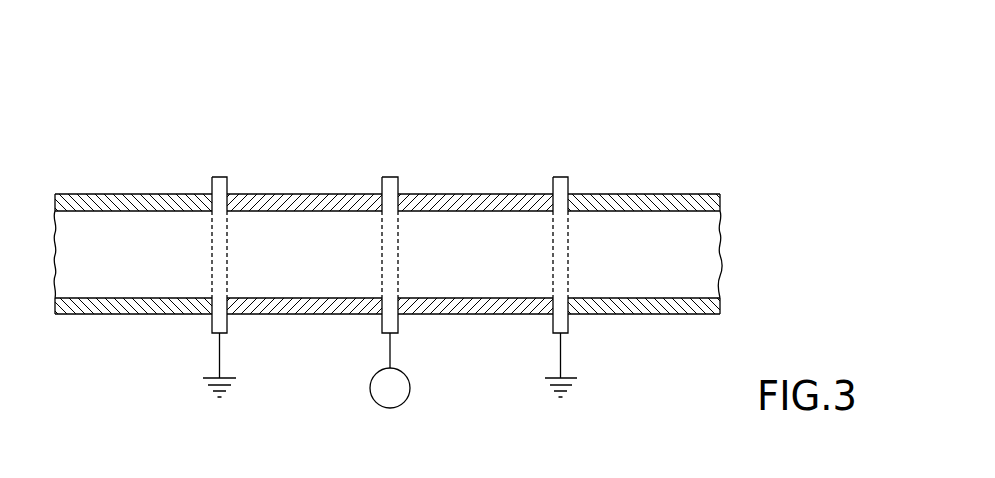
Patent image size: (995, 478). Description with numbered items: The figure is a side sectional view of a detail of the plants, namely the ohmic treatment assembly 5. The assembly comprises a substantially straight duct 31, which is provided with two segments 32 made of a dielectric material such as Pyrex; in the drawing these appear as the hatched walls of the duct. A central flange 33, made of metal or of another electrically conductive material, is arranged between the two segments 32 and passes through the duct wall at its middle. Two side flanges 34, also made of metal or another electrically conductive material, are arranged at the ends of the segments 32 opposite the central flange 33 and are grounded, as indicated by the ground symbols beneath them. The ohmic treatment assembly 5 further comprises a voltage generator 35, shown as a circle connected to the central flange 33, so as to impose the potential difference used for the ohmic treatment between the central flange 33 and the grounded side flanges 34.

The ohmic treatment assembly 5 is at (576, 90).
The duct 31 is at (450, 110).
The segments 32 is at (293, 195).
The central flange 33 is at (398, 185).
The side flanges 34 is at (568, 185).
The voltage generator 35 is at (406, 398).